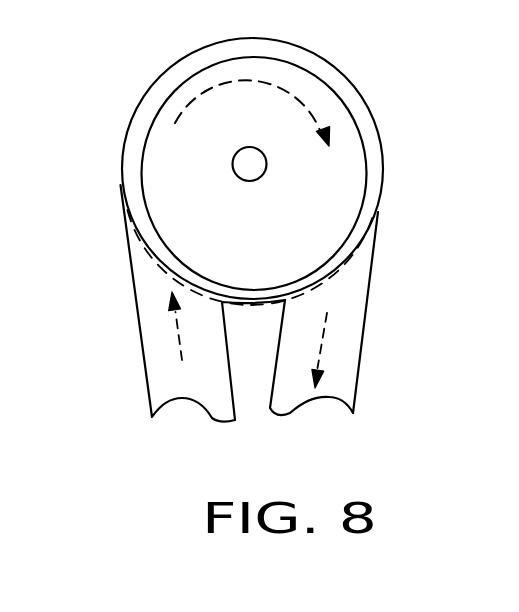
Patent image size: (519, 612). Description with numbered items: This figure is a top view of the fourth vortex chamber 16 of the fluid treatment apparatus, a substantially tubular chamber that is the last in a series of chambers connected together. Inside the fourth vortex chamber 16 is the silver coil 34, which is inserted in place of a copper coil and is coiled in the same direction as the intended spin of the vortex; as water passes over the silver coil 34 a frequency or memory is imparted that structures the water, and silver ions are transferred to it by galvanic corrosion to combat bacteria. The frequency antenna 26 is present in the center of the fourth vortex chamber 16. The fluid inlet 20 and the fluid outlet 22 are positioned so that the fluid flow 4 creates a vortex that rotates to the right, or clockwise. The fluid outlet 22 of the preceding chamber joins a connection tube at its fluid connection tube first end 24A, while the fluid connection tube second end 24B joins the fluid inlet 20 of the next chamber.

The fluid flow 4 is at (185, 103).
The fourth vortex chamber 16 is at (351, 83).
The silver coil 34 is at (363, 140).
The frequency antenna 26 is at (232, 161).
The fluid inlet 20 is at (157, 263).
The fluid outlet 22 is at (332, 276).
The fluid connection tube second end 24B is at (140, 334).
The fluid connection tube first end 24A is at (364, 328).